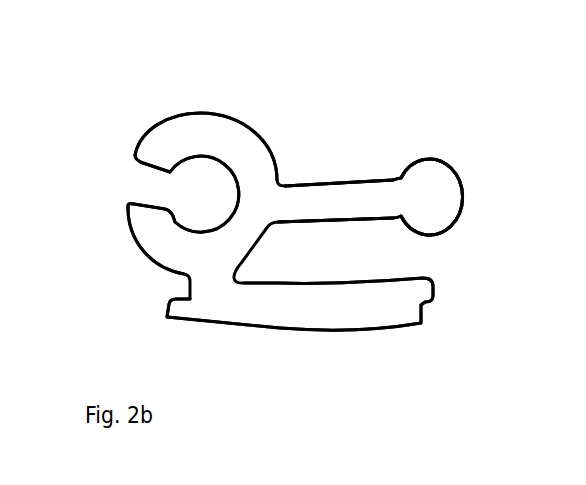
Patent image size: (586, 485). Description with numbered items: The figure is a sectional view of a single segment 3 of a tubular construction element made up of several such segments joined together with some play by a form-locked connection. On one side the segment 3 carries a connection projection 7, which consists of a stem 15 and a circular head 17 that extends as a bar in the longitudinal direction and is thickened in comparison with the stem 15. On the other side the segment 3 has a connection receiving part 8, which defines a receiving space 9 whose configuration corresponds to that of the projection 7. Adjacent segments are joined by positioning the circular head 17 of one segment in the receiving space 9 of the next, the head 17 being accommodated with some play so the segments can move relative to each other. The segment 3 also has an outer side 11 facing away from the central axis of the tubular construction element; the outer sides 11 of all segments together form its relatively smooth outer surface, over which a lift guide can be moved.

The segment 3 is at (465, 145).
The connection projection 7 is at (290, 152).
The connection receiving part 8 is at (133, 90).
The receiving space 9 is at (135, 182).
The outer side 11 is at (333, 330).
The stem 15 is at (320, 202).
The circular head 17 is at (443, 200).